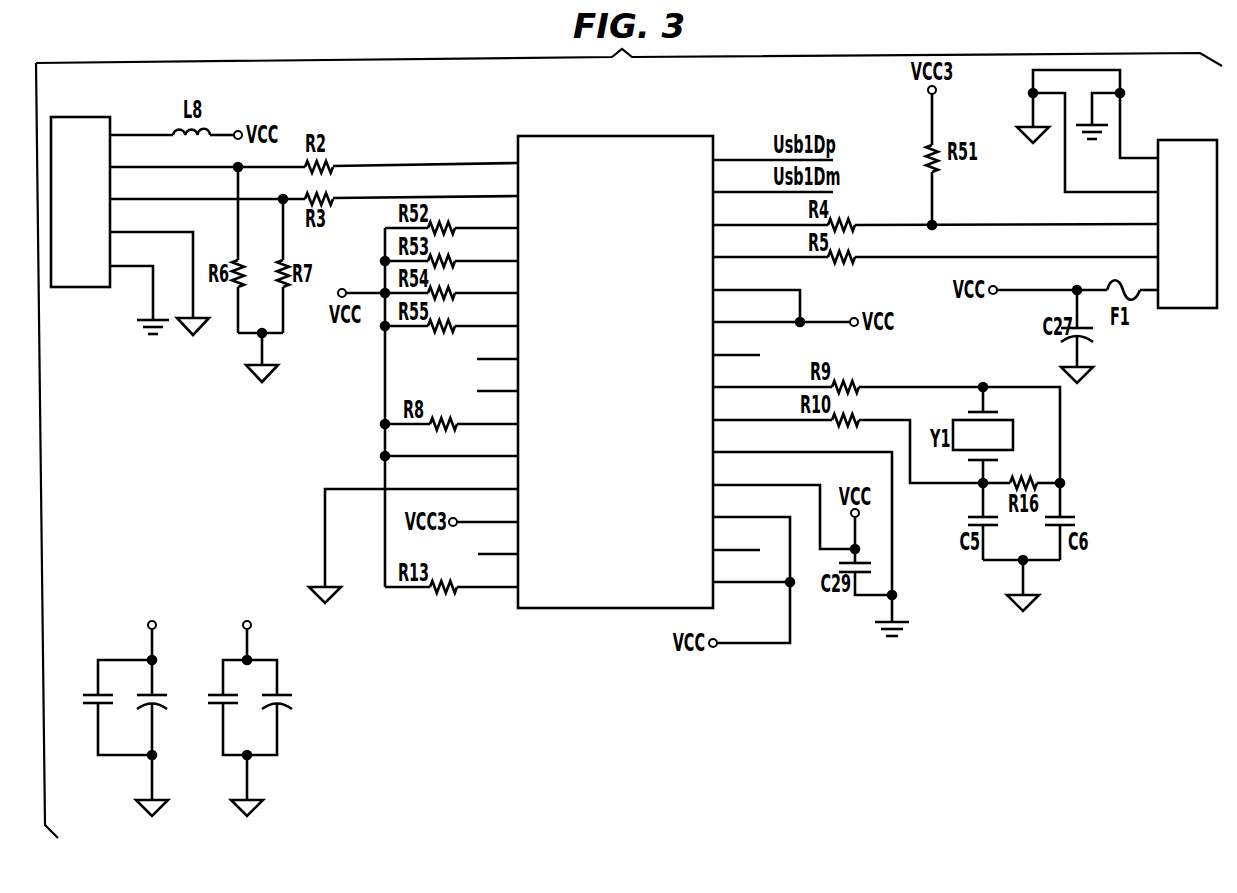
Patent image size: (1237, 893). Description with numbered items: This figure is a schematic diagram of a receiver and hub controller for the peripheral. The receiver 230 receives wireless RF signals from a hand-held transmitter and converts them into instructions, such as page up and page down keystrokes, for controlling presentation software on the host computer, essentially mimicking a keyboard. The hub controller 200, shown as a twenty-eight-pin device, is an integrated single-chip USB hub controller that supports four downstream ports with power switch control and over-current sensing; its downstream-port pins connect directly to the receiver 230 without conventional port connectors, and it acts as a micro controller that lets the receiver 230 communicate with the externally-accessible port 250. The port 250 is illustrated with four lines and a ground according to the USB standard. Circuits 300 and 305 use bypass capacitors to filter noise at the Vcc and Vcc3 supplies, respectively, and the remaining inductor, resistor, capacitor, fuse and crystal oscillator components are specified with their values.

The hub controller 200 is at (680, 122).
The receiver 230 is at (100, 112).
The externally-accessible port 250 is at (1184, 140).
The circuit 300 is at (146, 575).
The circuit 305 is at (241, 575).